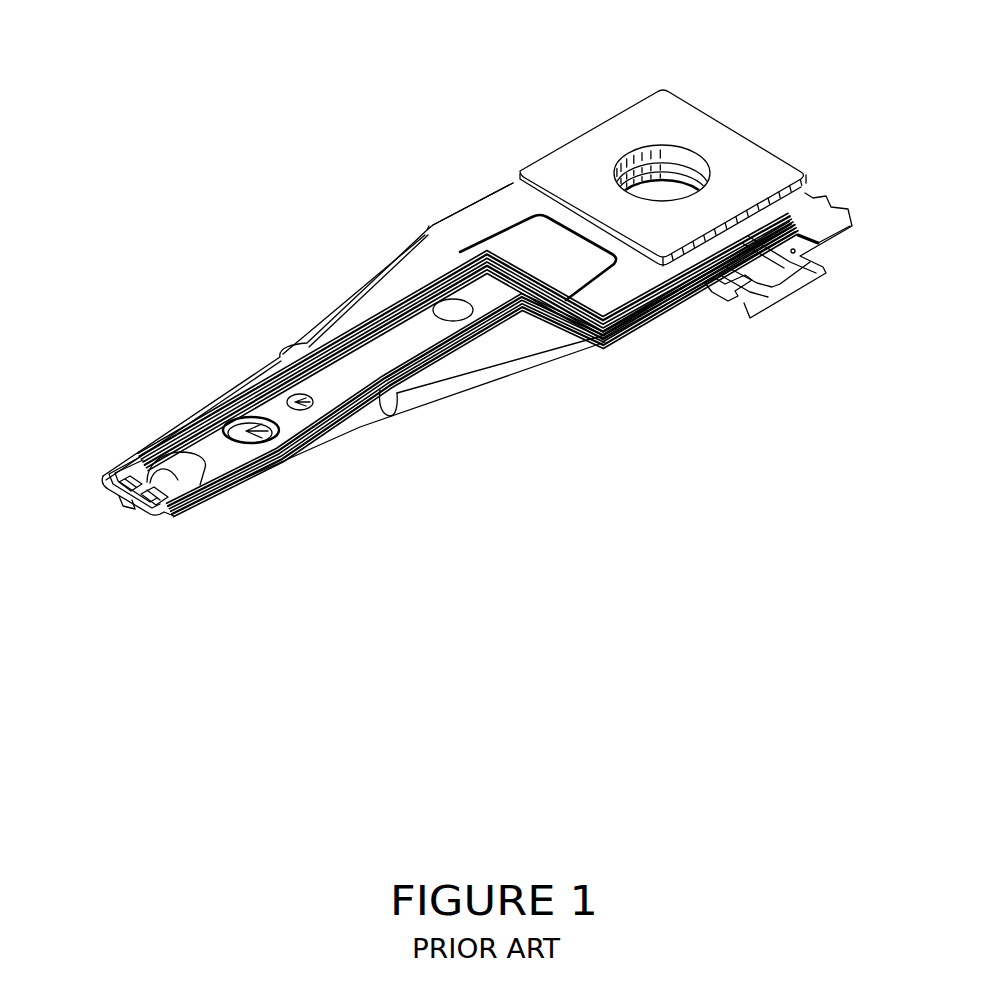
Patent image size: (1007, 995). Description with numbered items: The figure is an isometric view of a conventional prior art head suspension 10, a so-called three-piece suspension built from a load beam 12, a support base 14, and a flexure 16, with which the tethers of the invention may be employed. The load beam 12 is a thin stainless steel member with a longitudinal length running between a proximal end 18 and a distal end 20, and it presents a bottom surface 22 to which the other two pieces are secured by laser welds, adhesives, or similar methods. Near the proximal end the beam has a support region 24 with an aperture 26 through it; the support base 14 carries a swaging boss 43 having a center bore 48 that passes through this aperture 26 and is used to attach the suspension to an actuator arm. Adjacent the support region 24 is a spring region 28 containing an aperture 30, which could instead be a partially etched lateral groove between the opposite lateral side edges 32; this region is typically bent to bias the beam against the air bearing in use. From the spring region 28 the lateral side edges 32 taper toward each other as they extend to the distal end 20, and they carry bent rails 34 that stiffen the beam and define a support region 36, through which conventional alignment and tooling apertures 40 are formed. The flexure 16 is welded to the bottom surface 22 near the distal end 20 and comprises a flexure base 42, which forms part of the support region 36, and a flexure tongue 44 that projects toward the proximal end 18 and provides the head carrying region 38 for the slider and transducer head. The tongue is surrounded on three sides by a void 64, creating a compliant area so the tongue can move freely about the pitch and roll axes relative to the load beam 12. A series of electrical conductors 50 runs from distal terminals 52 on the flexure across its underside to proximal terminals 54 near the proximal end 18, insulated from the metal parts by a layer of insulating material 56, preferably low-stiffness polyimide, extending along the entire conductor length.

The head suspension 10 is at (353, 329).
The load beam 12 is at (390, 290).
The support base 14 is at (663, 139).
The flexure 16 is at (480, 282).
The proximal end 18 is at (806, 190).
The distal end 20 is at (196, 493).
The bottom surface 22 is at (550, 259).
The support region 24 is at (750, 228).
The aperture 26 is at (684, 173).
The spring region 28 is at (493, 193).
The aperture 30 is at (553, 238).
The lateral side edges 32 is at (448, 220).
The bent rails 34 is at (348, 330).
The support region 36 is at (562, 388).
The head carrying region 38 is at (198, 507).
The alignment and tooling apertures 40 is at (452, 314).
The flexure base 42 is at (283, 413).
The mounting hole 43 is at (652, 166).
The flexure tongue 44 is at (150, 476).
The center bore 48 is at (668, 148).
The electrical conductors 50 is at (660, 313).
The distal terminals 52 is at (116, 476).
The proximal terminals 54 is at (773, 283).
The layer of insulating material 56 is at (263, 458).
The void 64 is at (223, 477).